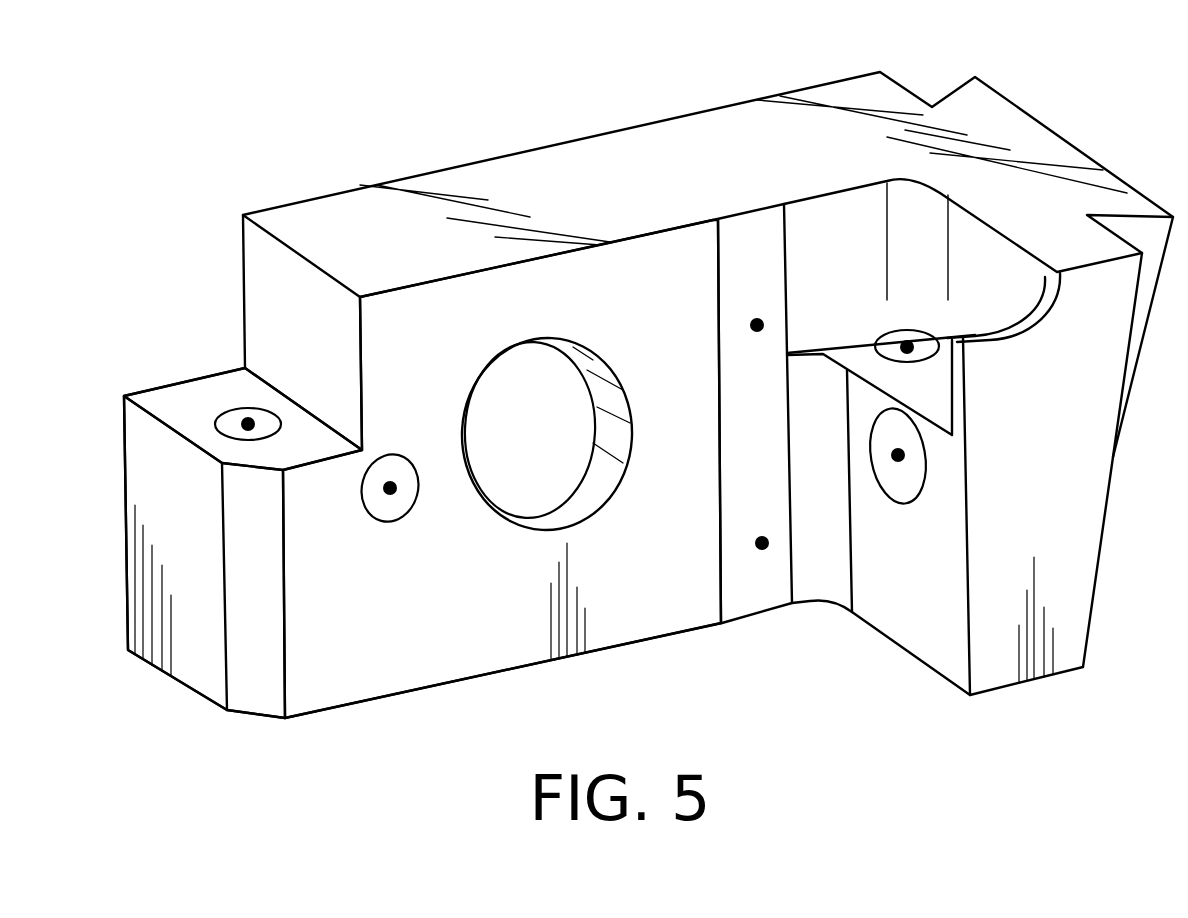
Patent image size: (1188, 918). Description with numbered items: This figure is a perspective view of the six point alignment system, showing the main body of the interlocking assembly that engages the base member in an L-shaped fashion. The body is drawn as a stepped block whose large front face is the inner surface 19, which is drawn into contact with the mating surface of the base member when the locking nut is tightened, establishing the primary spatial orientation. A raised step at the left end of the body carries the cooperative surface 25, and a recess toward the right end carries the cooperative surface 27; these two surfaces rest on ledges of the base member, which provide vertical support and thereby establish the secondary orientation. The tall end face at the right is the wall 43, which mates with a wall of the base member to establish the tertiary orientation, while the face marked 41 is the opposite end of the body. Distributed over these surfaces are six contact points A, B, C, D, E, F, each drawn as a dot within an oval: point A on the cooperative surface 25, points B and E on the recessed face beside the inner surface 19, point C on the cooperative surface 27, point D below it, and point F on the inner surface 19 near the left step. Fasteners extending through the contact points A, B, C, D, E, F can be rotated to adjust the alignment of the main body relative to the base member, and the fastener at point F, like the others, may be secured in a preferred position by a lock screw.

The inner surface 19 is at (470, 337).
The cooperative surface 25 is at (207, 418).
The cooperative surface 27 is at (906, 399).
The left end face 41 is at (163, 535).
The wall 43 is at (914, 570).
The contact point A is at (250, 418).
The contact point B is at (755, 322).
The contact point C is at (905, 343).
The contact point D is at (893, 455).
The contact point E is at (760, 538).
The contact point F is at (385, 492).